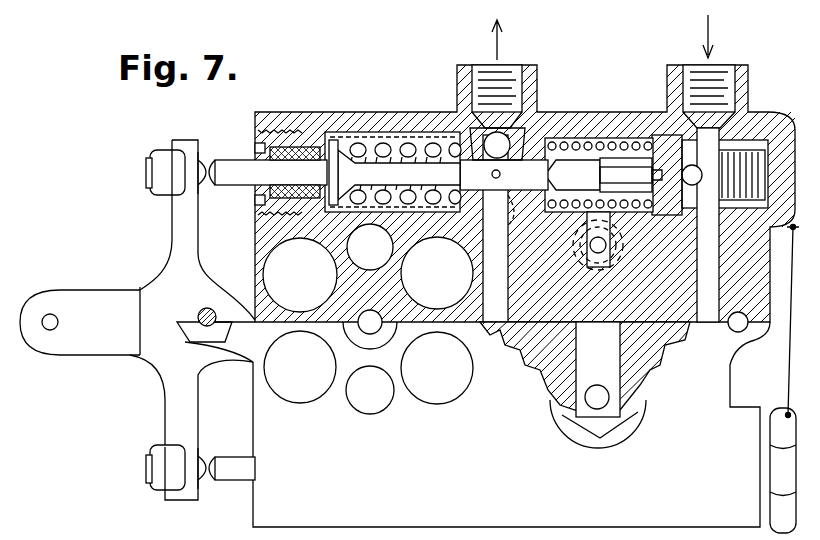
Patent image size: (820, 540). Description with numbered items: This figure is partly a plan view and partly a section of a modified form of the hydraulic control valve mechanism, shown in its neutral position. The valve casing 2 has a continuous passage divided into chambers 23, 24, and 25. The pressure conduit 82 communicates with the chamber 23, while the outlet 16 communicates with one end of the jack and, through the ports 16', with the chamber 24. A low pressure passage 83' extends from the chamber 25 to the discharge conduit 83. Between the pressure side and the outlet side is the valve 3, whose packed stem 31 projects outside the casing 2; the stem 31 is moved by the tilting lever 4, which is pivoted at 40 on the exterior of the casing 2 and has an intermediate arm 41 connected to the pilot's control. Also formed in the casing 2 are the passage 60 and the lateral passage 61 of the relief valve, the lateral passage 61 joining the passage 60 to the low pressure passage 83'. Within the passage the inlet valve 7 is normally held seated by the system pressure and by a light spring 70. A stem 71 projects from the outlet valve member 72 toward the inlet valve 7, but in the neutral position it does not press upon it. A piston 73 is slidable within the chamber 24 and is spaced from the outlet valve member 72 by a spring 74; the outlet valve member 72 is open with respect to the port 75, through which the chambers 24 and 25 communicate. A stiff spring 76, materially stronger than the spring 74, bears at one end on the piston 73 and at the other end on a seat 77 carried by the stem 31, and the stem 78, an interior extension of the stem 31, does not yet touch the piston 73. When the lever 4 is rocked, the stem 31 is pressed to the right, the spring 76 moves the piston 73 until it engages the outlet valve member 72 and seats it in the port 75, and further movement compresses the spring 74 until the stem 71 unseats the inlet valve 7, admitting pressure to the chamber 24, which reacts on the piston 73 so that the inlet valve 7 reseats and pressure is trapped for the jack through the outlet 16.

The valve casing 2 is at (504, 296).
The valve 3 is at (2, 180).
The tilting lever 4 is at (182, 219).
The inlet valve 7 is at (722, 240).
The outlet 16 is at (598, 369).
The ports 16' is at (598, 282).
The chamber 23 is at (668, 140).
The chamber 24 is at (642, 150).
The chamber 25 is at (500, 142).
The stem 31 is at (233, 158).
The pivot 40 is at (190, 332).
The intermediate arm 41 is at (73, 302).
The passage 60 is at (548, 392).
The lateral passage 61 is at (512, 360).
The light spring 70 is at (742, 136).
The stem 71 is at (722, 262).
The outlet valve member 72 is at (580, 162).
The piston 73 is at (530, 150).
The spring 74 is at (612, 158).
The port 75 is at (460, 240).
The spring 76 is at (418, 150).
The seat 77 is at (334, 140).
The stem 78 is at (378, 190).
The pressure conduit 82 is at (722, 72).
The discharge conduit 83 is at (504, 74).
The low pressure passage 83' is at (368, 372).